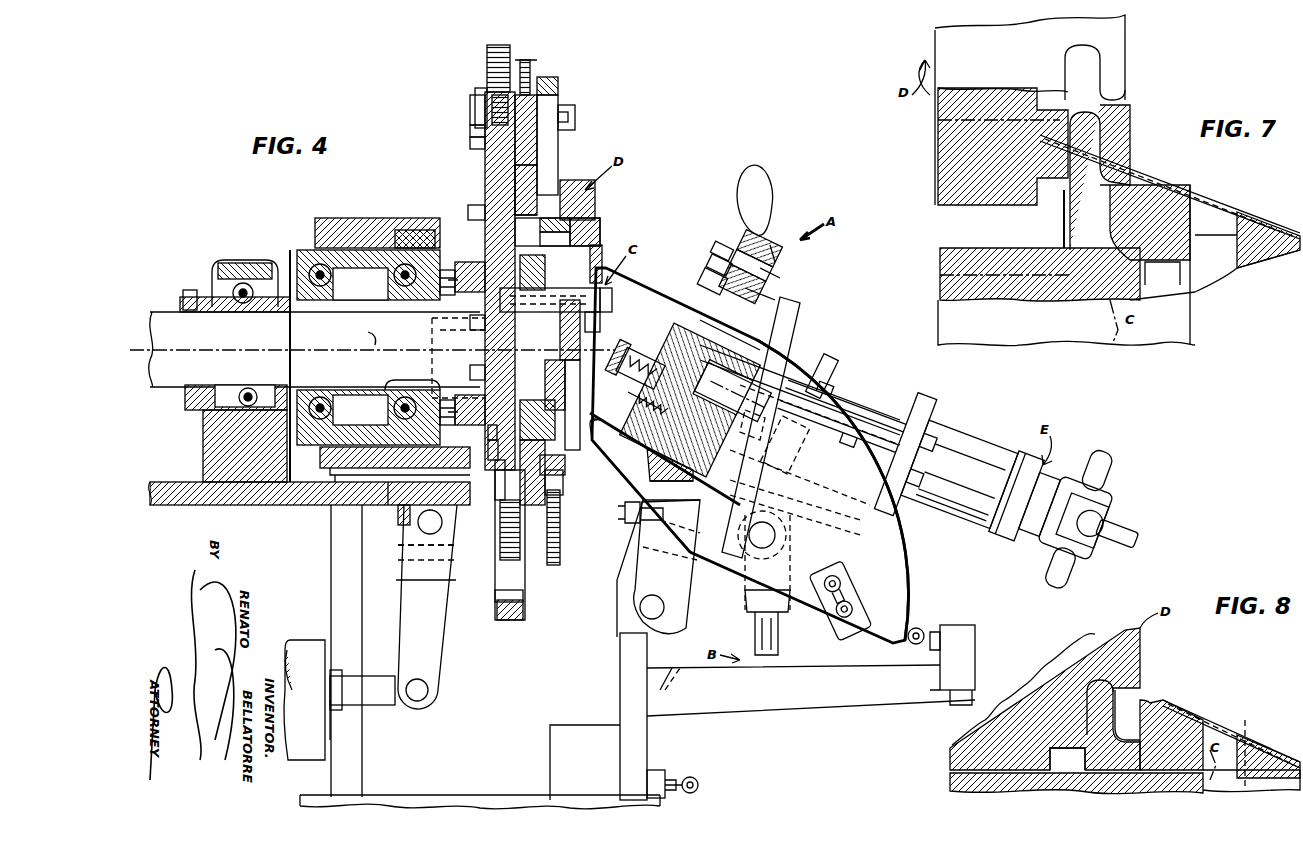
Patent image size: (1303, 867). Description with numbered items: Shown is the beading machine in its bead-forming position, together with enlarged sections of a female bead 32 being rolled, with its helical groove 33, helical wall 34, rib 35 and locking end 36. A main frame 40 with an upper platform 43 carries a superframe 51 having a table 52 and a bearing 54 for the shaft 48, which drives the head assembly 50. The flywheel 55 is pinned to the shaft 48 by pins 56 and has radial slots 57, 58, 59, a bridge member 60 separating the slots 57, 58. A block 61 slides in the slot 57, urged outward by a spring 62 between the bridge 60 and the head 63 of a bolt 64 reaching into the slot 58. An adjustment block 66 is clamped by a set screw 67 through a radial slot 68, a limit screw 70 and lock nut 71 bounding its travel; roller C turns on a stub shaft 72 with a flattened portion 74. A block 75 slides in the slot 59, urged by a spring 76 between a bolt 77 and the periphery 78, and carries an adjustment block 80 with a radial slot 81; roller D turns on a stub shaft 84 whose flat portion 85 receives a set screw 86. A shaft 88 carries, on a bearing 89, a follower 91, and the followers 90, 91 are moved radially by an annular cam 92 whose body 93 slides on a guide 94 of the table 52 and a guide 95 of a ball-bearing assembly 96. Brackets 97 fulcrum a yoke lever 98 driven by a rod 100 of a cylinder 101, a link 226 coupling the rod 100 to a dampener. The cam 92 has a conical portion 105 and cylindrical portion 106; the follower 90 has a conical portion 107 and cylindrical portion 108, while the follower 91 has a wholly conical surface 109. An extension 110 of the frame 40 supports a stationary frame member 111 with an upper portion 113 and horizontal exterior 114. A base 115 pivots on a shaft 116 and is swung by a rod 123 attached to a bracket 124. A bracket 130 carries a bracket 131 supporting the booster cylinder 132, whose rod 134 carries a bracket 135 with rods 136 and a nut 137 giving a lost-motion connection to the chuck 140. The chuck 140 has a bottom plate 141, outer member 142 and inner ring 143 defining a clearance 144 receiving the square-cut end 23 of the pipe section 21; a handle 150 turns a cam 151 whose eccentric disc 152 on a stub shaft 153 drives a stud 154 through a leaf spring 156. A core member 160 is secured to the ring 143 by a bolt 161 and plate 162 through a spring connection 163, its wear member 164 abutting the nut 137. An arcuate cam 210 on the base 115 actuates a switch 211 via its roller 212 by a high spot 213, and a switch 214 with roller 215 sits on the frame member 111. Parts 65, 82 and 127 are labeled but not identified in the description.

In FIG. 4, the pipe section 21 is at (672, 285).
In FIG. 7, the pipe section 21 is at (1228, 205).
In FIG. 8, the pipe section 21 is at (1255, 742).
In FIG. 4, the square-cut end 23 is at (758, 330).
In FIG. 4, the female bead 32 is at (594, 432).
In FIG. 8, the female bead 32 is at (1145, 682).
In FIG. 4, the helical groove 33 is at (612, 297).
In FIG. 7, the helical groove 33 is at (1122, 222).
In FIG. 8, the helical groove 33 is at (1152, 700).
In FIG. 8, the helical wall 34 is at (1138, 668).
In FIG. 4, the rib 35 is at (600, 252).
In FIG. 7, the rib 35 is at (1090, 158).
In FIG. 8, the rib 35 is at (1105, 652).
In FIG. 7, the locking end 36 is at (1064, 210).
In FIG. 8, the locking end 36 is at (1082, 742).
In FIG. 4, the main frame 40 is at (466, 798).
In FIG. 4, the upper platform 43 is at (430, 795).
In FIG. 4, the shaft 48 is at (226, 342).
In FIG. 4, the bead-forming head assembly 50 is at (478, 148).
In FIG. 4, the superframe 51 is at (331, 590).
In FIG. 4, the table 52 is at (178, 490).
In FIG. 4, the shaft-supporting bearing 54 is at (240, 258).
In FIG. 4, the flywheel 55 is at (468, 96).
In FIG. 4, the pins 56 is at (432, 322).
In FIG. 4, the closed slot 57 is at (492, 470).
In FIG. 4, the closed slot 58 is at (525, 600).
In FIG. 4, the closed slot 59 is at (472, 125).
In FIG. 4, the bridge member 60 is at (490, 495).
In FIG. 4, the block 61 is at (556, 430).
In FIG. 4, the spring 62 is at (498, 545).
In FIG. 4, the bolt head 63 is at (510, 545).
In FIG. 4, the bolt 64 is at (535, 506).
In FIG. 4, the pinion 65 is at (546, 258).
In FIG. 4, the adjustment block 66 is at (560, 360).
In FIG. 4, the set screw 67 is at (560, 404).
In FIG. 4, the radial slot 68 is at (578, 412).
In FIG. 4, the limit screw 70 is at (560, 562).
In FIG. 4, the lock nut 71 is at (560, 508).
In FIG. 4, the stub shaft 72 is at (606, 318).
In FIG. 7, the stub shaft 72 is at (1155, 285).
In FIG. 4, the flattened portion 74 is at (560, 302).
In FIG. 4, the block 75 is at (487, 180).
In FIG. 4, the spring 76 is at (487, 62).
In FIG. 4, the bolt 77 is at (474, 136).
In FIG. 4, the flywheel periphery 78 is at (480, 82).
In FIG. 4, the adjustment block 80 is at (565, 78).
In FIG. 4, the radial slot 81 is at (558, 155).
In FIG. 4, the bolt 82 is at (575, 117).
In FIG. 4, the stub shaft 84 is at (600, 228).
In FIG. 4, the flat portion 85 is at (559, 224).
In FIG. 4, the set screw 86 is at (547, 234).
In FIG. 4, the shaft 88 is at (515, 198).
In FIG. 4, the anti-friction bearing 89 is at (466, 292).
In FIG. 4, the cam follower 90 is at (455, 398).
In FIG. 4, the cam follower 91 is at (450, 285).
In FIG. 4, the annular cam 92 is at (472, 215).
In FIG. 4, the cam body 93 is at (325, 478).
In FIG. 4, the guide 94 is at (388, 492).
In FIG. 4, the guide 95 is at (378, 218).
In FIG. 4, the ball-bearing assembly 96 is at (305, 250).
In FIG. 4, the depending brackets 97 is at (398, 522).
In FIG. 4, the yoke-type lever 98 is at (438, 665).
In FIG. 4, the reciprocating rod 100 is at (325, 710).
In FIG. 4, the cylinder 101 is at (315, 624).
In FIG. 4, the conical cam portion 105 is at (447, 548).
In FIG. 4, the cylindrical cam portion 106 is at (337, 408).
In FIG. 4, the conical follower portion 107 is at (380, 390).
In FIG. 4, the cylindrical follower portion 108 is at (432, 522).
In FIG. 4, the cam surface 109 is at (432, 230).
In FIG. 4, the frame extension 110 is at (550, 743).
In FIG. 4, the stationary frame member 111 is at (647, 748).
In FIG. 4, the upper frame portion 113 is at (617, 630).
In FIG. 4, the horizontal exterior 114 is at (795, 716).
In FIG. 4, the base 115 is at (795, 305).
In FIG. 4, the shaft 116 is at (672, 578).
In FIG. 4, the piston rod 123 is at (745, 620).
In FIG. 4, the bracket 124 is at (740, 540).
In FIG. 4, the bolt 127 is at (672, 512).
In FIG. 4, the bracket 130 is at (900, 420).
In FIG. 4, the bracket 131 is at (925, 405).
In FIG. 4, the booster cylinder 132 is at (960, 440).
In FIG. 4, the piston rod 134 is at (860, 465).
In FIG. 4, the bracket 135 is at (832, 370).
In FIG. 4, the rods 136 is at (806, 366).
In FIG. 4, the nut 137 is at (828, 398).
In FIG. 4, the chuck 140 is at (762, 234).
In FIG. 4, the bottom plate 141 is at (785, 248).
In FIG. 4, the outer chuck member 142 is at (642, 485).
In FIG. 7, the inner chuck ring 143 is at (1238, 232).
In FIG. 8, the inner chuck ring 143 is at (1240, 730).
In FIG. 4, the annular clearance 144 is at (648, 455).
In FIG. 4, the chuck-closing handle 150 is at (752, 168).
In FIG. 4, the cam 151 is at (716, 244).
In FIG. 4, the cylindrical disc 152 is at (712, 258).
In FIG. 4, the stub shaft 153 is at (772, 272).
In FIG. 4, the stud 154 is at (708, 262).
In FIG. 4, the leaf spring 156 is at (767, 292).
In FIG. 4, the core member 160 is at (700, 404).
In FIG. 4, the bolt 161 is at (630, 368).
In FIG. 4, the plate 162 is at (640, 392).
In FIG. 4, the shock-absorbing spring connection 163 is at (638, 402).
In FIG. 4, the wear member 164 is at (762, 427).
In FIG. 4, the arcuate cam 210 is at (895, 565).
In FIG. 4, the switch 211 is at (980, 642).
In FIG. 4, the roller 212 is at (912, 612).
In FIG. 4, the high spot 213 is at (905, 638).
In FIG. 4, the normally closed switch 214 is at (665, 775).
In FIG. 4, the roller 215 is at (698, 786).
In FIG. 4, the link 226 is at (333, 735).